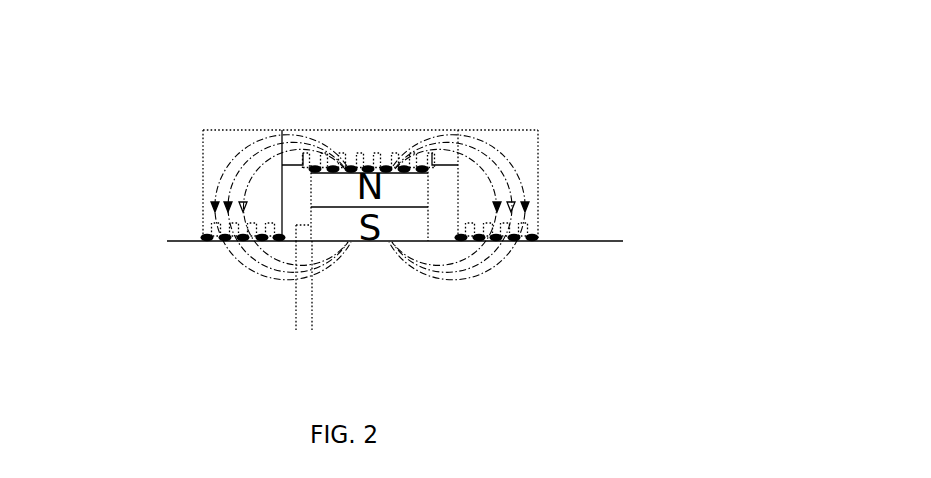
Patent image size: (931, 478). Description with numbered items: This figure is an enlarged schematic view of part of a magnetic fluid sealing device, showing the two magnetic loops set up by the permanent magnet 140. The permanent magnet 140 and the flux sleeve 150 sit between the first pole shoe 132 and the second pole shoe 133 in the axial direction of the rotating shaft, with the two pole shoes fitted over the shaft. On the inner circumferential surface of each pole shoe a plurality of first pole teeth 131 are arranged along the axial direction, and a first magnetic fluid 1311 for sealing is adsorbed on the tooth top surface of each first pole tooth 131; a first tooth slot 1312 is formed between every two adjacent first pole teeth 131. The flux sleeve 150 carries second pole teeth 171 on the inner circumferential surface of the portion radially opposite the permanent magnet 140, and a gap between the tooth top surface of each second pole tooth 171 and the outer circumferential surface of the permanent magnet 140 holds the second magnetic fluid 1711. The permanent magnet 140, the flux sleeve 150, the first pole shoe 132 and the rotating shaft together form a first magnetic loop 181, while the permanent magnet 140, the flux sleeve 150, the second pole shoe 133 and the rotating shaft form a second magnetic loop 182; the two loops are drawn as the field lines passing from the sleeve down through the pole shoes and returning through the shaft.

The first pole tooth 131 is at (537, 243).
The first magnetic fluid 1311 is at (512, 243).
The first tooth slot 1312 is at (209, 240).
The first pole shoe 132 is at (220, 143).
The second pole shoe 133 is at (525, 142).
The permanent magnet 140 is at (377, 243).
The flux sleeve 150 is at (335, 145).
The second pole tooth 171 is at (360, 168).
The second magnetic fluid 1711 is at (423, 168).
The first magnetic loop 181 is at (227, 168).
The second magnetic loop 182 is at (497, 157).